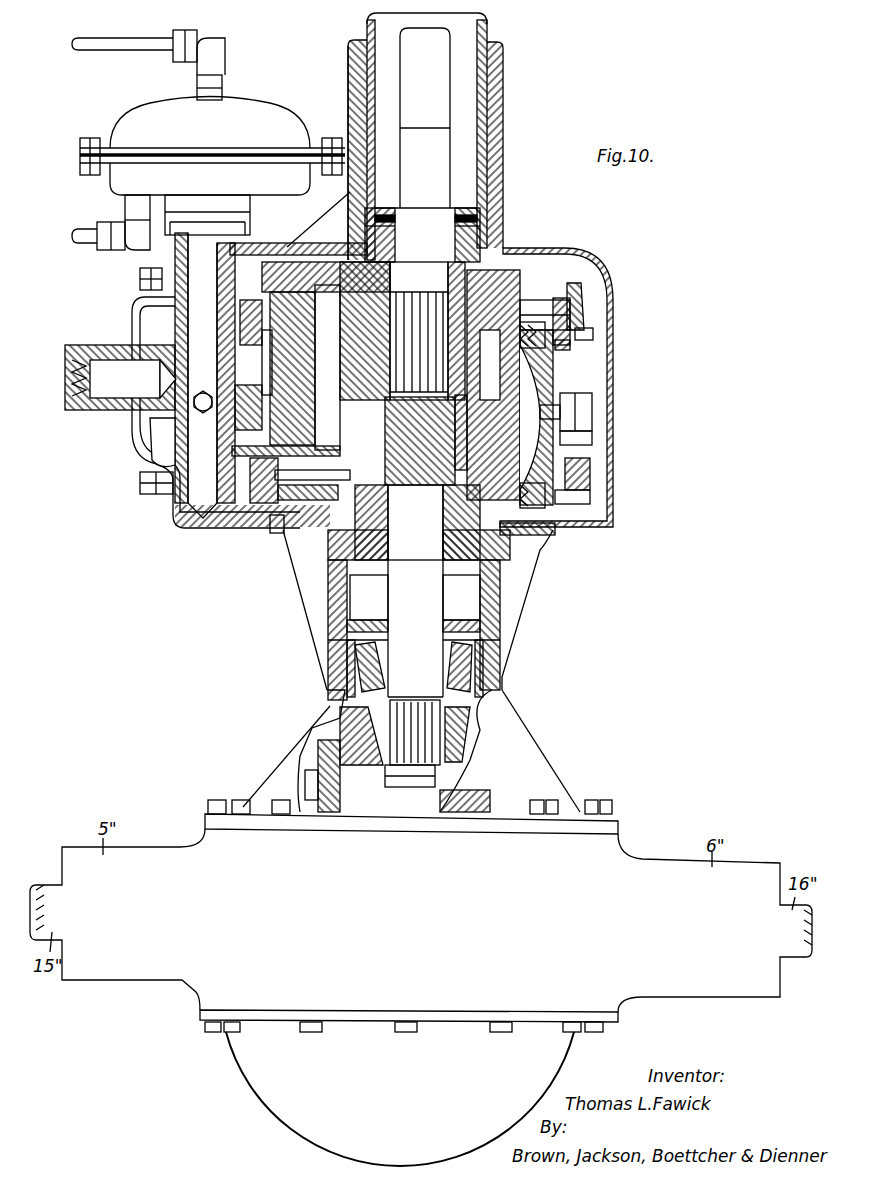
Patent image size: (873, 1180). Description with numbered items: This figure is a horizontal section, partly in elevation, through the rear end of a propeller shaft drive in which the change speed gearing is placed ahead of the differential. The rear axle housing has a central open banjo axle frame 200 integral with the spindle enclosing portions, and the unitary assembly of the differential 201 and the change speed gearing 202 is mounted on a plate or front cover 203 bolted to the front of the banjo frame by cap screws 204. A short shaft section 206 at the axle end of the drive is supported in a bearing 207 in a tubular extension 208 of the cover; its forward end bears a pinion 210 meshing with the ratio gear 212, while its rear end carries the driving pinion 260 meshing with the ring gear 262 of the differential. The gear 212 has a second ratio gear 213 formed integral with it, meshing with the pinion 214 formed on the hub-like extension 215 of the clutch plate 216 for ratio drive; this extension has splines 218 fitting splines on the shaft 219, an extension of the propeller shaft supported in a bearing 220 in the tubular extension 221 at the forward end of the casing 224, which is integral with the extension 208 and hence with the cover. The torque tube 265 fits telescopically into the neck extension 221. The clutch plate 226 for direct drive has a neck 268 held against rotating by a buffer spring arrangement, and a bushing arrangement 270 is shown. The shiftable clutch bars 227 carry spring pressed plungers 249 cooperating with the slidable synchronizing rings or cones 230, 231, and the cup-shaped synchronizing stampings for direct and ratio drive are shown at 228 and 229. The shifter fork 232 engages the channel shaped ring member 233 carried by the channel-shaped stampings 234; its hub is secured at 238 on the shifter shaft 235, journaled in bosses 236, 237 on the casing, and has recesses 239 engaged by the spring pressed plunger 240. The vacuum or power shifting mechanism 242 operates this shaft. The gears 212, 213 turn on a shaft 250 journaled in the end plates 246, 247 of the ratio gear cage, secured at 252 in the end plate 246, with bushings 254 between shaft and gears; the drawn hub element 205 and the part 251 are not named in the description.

The banjo axle frame 200 is at (212, 975).
The differential 201 is at (313, 750).
The change speed gearing 202 is at (244, 528).
The front cover 203 is at (490, 813).
The cap screws 204 is at (238, 787).
The driven shaft 205 is at (500, 437).
The short shaft section 206 is at (397, 608).
The bearing 207 is at (497, 668).
The tubular extension 208 is at (492, 607).
The pinion 210 is at (462, 407).
The ratio gear 212 is at (282, 395).
The second ratio gear 213 is at (282, 356).
The pinion 214 is at (472, 375).
The hub-like extension 215 is at (456, 327).
The clutch plate 216 is at (505, 273).
The splines 218 is at (397, 305).
The shaft 219 is at (440, 100).
The bearing 220 is at (466, 226).
The tubular extension 221 is at (487, 138).
The casing 224 is at (267, 253).
The clutch plate 226 is at (275, 528).
The shiftable clutch bars 227 is at (548, 373).
The synchronizing stamping 228 is at (570, 498).
The synchronizing stamping 229 is at (583, 302).
The synchronizing ring 230 is at (575, 485).
The synchronizing ring 231 is at (578, 328).
The shifter fork 232 is at (216, 385).
The channel shaped ring member 233 is at (583, 410).
The channel-shaped stampings 234 is at (580, 441).
The shifter shaft 235 is at (190, 315).
The boss 236 is at (175, 490).
The boss 237 is at (148, 283).
The hub securing point 238 is at (207, 412).
The recesses 239 is at (160, 427).
The spring pressed plunger 240 is at (107, 370).
The power shifting mechanism 242 is at (138, 100).
The end plate 246 is at (467, 492).
The end plate 247 is at (292, 300).
The spring pressed plungers 249 is at (560, 335).
The shaft 250 is at (287, 342).
The hub block 251 is at (272, 318).
The securing point 252 is at (277, 488).
The bushings 254 is at (263, 441).
The driving pinion 260 is at (447, 750).
The ring gear 262 is at (318, 715).
The torque tube 265 is at (488, 30).
The neck 268 is at (402, 548).
The bushing arrangement 270 is at (343, 567).